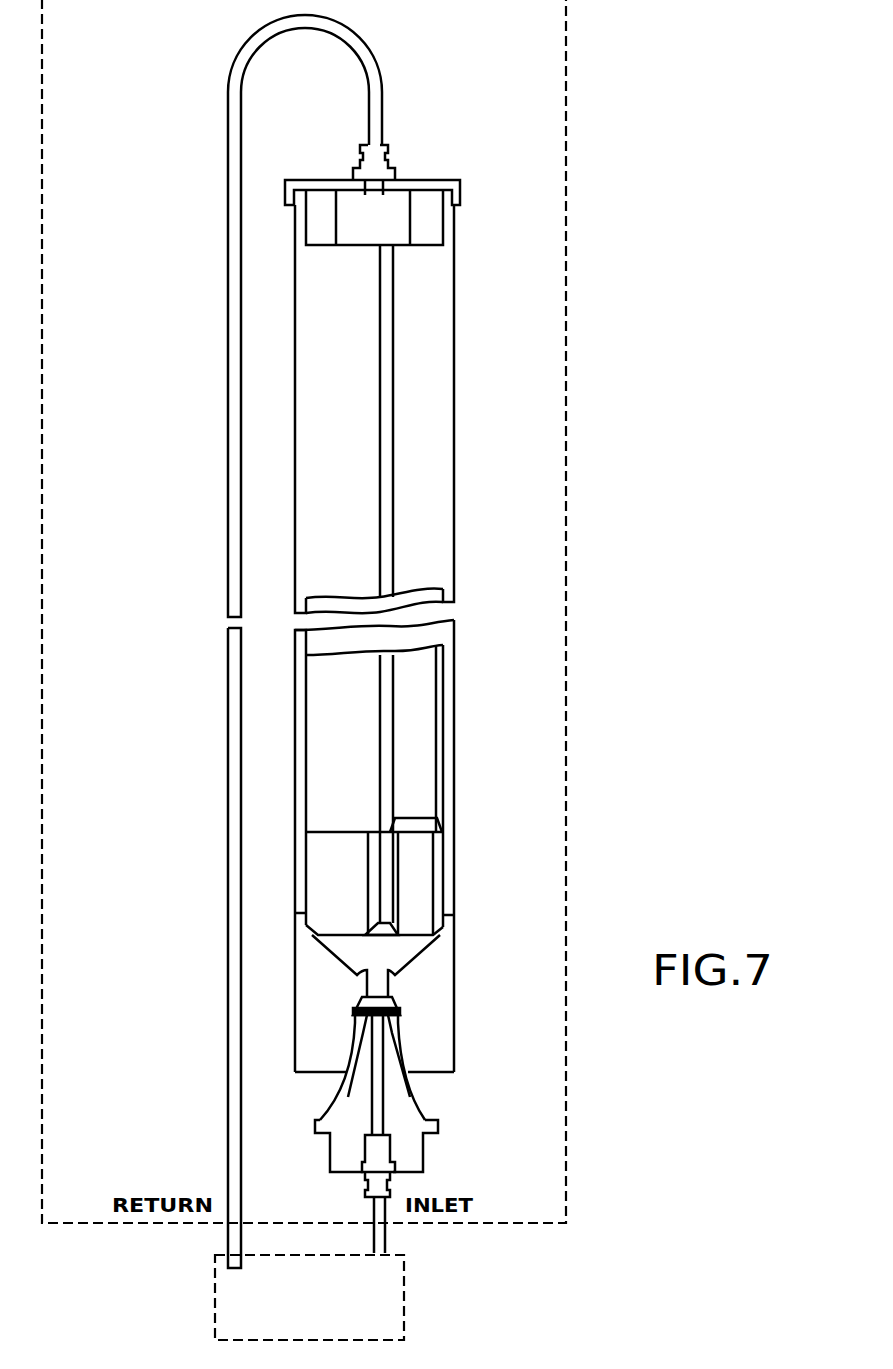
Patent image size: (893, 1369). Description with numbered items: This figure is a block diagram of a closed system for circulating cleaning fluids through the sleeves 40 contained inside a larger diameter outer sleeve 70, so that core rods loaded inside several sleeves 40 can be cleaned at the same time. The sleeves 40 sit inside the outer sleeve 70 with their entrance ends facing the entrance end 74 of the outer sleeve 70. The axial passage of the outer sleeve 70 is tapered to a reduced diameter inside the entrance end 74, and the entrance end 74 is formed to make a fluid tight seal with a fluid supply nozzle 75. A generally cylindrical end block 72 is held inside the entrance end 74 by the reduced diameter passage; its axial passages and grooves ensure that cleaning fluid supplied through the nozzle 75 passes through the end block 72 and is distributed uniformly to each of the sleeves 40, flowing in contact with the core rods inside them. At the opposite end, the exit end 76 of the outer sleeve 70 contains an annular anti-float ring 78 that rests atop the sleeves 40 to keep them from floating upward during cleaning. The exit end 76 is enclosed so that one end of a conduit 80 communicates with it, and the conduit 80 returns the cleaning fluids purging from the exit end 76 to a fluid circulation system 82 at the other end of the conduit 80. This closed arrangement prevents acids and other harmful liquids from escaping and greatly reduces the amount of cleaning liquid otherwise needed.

The sleeve 40 is at (345, 407).
The outer sleeve 70 is at (457, 687).
The end block 72 is at (455, 883).
The entrance end 74 is at (455, 1010).
The fluid supply nozzle 75 is at (415, 1153).
The exit end 76 is at (454, 219).
The anti-float ring 78 is at (403, 228).
The conduit 80 is at (228, 353).
The fluid circulation system 82 is at (408, 1298).